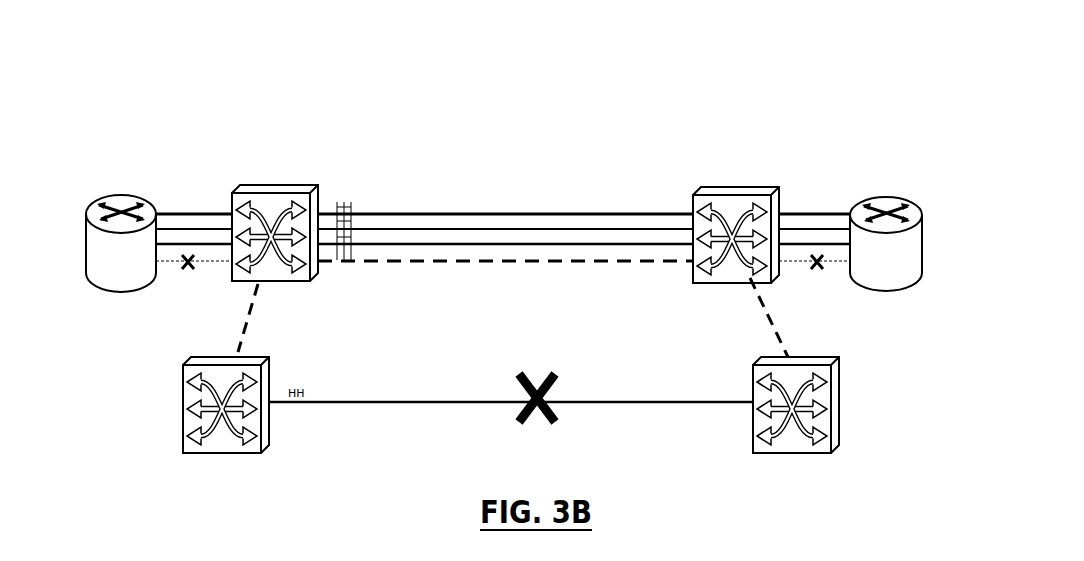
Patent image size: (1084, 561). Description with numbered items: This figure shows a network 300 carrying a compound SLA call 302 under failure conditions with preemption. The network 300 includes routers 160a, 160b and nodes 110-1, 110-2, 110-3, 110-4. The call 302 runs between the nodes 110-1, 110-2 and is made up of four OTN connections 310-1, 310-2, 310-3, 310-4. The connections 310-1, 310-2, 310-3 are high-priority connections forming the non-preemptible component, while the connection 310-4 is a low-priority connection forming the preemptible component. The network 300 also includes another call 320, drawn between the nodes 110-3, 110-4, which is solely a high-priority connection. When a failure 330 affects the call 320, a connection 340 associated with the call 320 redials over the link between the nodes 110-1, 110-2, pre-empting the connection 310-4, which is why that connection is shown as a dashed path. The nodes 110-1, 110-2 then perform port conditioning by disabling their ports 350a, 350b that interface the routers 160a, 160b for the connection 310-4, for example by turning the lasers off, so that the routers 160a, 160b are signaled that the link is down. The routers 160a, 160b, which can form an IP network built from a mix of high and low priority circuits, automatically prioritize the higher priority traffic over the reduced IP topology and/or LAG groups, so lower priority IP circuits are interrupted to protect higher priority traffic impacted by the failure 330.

The network 300 is at (630, 128).
The compound SLA call 302 is at (617, 204).
The node 110-1 is at (277, 187).
The node 110-2 is at (742, 187).
The node 110-3 is at (260, 357).
The node 110-4 is at (832, 355).
The router 160a is at (137, 197).
The router 160b is at (863, 265).
The connection 310-1 is at (390, 213).
The connection 310-2 is at (448, 228).
The connection 310-3 is at (517, 243).
The connection 310-4 is at (428, 262).
The call 320 is at (437, 401).
The failure 330 is at (553, 375).
The connection 340 is at (245, 327).
The port 350a is at (190, 263).
The port 350b is at (818, 260).